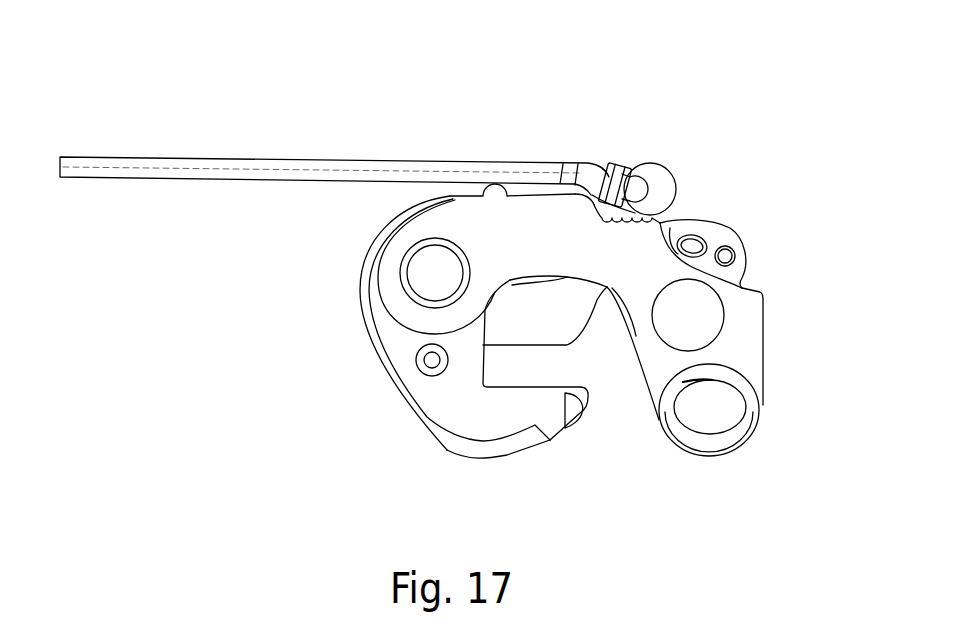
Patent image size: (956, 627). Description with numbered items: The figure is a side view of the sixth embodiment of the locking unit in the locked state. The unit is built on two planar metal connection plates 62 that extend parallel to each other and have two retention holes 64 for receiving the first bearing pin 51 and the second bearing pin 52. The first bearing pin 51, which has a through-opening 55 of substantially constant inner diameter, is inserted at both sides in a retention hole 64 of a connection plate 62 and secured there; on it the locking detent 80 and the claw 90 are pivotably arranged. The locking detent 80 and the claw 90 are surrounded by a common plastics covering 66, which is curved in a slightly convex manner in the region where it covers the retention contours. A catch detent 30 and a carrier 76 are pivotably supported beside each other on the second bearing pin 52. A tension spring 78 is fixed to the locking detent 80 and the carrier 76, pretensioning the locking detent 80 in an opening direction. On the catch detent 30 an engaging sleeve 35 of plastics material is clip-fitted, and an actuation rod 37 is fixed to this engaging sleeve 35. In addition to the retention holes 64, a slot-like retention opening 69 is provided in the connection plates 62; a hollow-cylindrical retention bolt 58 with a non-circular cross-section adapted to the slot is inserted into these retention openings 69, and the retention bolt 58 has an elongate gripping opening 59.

The actuation rod 37 is at (143, 165).
The connection plate 62 is at (456, 223).
The tension spring 78 is at (594, 210).
The engaging sleeve 35 is at (620, 172).
The catch detent 30 is at (676, 191).
The carrier 76 is at (712, 241).
The second bearing pin 52 is at (697, 303).
The retention hole 64 is at (696, 328).
The first bearing pin 51 is at (433, 242).
The through-opening 55 is at (425, 262).
The claw 90 is at (570, 317).
The locking detent 80 is at (422, 403).
The covering 66 is at (488, 450).
The retention bolt 58 is at (705, 442).
The retention opening 69 is at (728, 405).
The gripping opening 59 is at (692, 411).